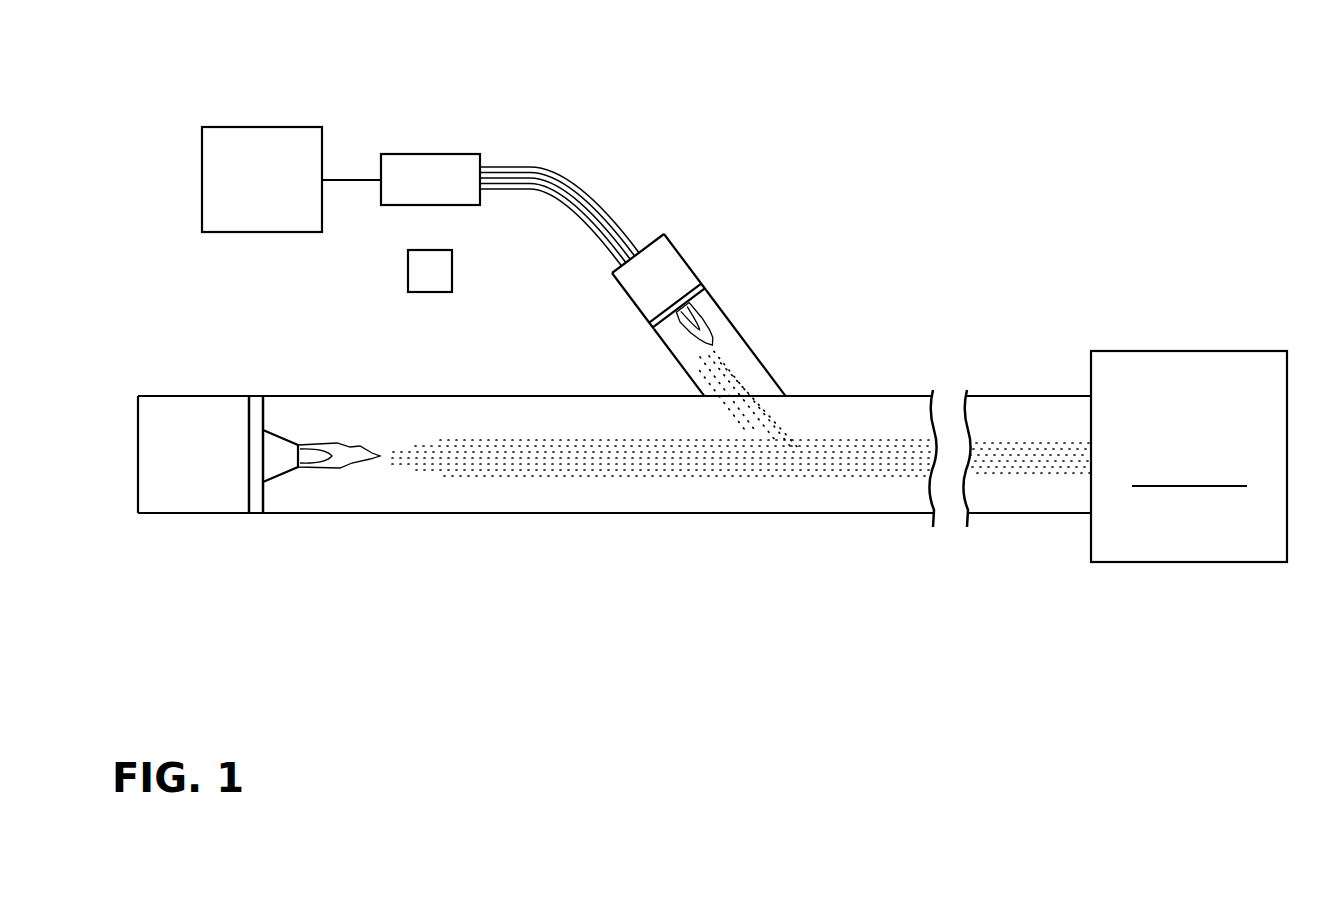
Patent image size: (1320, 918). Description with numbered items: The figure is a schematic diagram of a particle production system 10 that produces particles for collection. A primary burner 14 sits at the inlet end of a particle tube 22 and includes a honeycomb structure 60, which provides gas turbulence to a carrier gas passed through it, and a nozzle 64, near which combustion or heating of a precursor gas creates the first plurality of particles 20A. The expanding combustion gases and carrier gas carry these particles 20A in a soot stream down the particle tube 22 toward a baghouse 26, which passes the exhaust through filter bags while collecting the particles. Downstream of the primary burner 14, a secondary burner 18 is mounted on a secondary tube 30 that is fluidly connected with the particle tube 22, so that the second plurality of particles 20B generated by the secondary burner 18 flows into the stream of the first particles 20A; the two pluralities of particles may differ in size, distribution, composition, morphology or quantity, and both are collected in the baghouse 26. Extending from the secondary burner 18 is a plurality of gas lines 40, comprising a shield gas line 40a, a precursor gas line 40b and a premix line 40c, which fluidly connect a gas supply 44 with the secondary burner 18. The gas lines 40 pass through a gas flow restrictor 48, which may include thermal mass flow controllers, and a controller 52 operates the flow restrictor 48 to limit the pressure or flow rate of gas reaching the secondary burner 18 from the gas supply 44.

The particle production system 10 is at (958, 235).
The primary burner 14 is at (220, 432).
The secondary burner 18 is at (672, 268).
The particle tube 22 is at (462, 517).
The baghouse 26 is at (1170, 353).
The secondary tube 30 is at (747, 332).
The first plurality of particles 20A is at (608, 468).
The second plurality of particles 20B is at (757, 400).
The plurality of gas lines 40 is at (574, 168).
The shield gas line 40a is at (587, 185).
The precursor gas line 40b is at (612, 222).
The premix line 40c is at (613, 248).
The gas supply 44 is at (273, 143).
The gas flow restrictor 48 is at (448, 165).
The controller 52 is at (427, 285).
The honeycomb structure 60 is at (255, 485).
The nozzle 64 is at (277, 457).